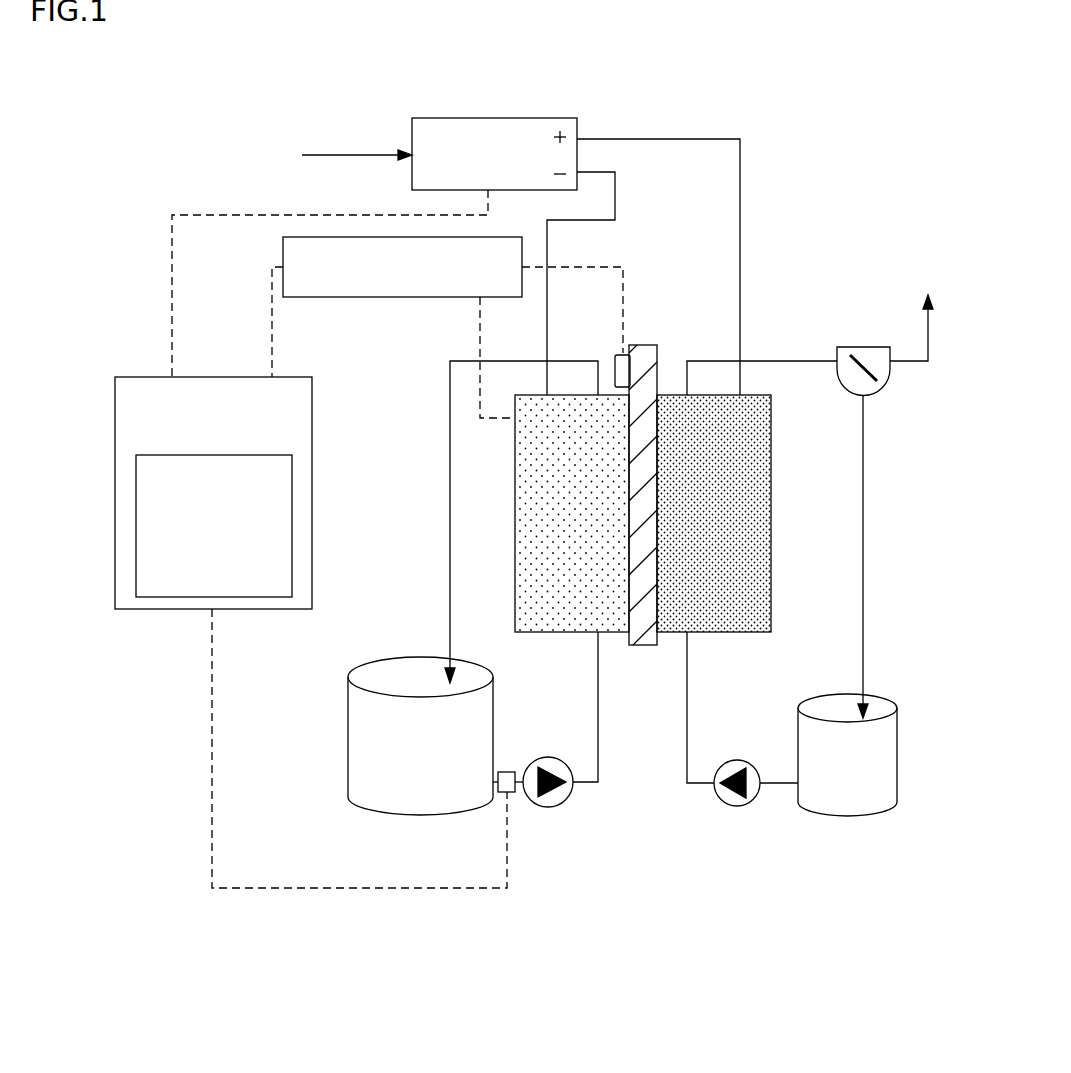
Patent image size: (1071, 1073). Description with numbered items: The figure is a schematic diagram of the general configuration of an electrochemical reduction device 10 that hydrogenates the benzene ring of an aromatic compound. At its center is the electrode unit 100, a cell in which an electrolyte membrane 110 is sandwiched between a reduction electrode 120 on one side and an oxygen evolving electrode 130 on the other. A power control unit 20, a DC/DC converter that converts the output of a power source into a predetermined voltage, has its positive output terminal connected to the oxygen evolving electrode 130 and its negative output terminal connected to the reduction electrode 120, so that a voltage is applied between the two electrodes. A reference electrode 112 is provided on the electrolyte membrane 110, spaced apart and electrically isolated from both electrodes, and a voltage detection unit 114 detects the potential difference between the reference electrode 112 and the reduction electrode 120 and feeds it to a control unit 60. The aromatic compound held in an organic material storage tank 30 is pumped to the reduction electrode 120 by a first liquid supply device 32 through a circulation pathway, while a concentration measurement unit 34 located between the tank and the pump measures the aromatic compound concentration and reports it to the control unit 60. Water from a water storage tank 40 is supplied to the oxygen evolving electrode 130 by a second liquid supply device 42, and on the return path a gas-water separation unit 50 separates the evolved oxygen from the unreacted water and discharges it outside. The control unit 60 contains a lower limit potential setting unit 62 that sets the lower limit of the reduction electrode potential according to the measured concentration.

The electrochemical reduction device 10 is at (663, 912).
The power control unit 20 is at (513, 118).
The organic material storage tank 30 is at (440, 815).
The first liquid supply device 32 is at (555, 807).
The concentration measurement unit 34 is at (507, 772).
The water storage tank 40 is at (880, 813).
The second liquid supply device 42 is at (745, 806).
The gas-water separation unit 50 is at (877, 395).
The control unit 60 is at (311, 632).
The lower limit potential setting unit 62 is at (292, 465).
The electrode unit 100 is at (665, 488).
The electrolyte membrane 110 is at (645, 645).
The reference electrode 112 is at (615, 358).
The voltage detection unit 114 is at (390, 297).
The reduction electrode 120 is at (545, 632).
The oxygen evolving electrode 130 is at (745, 632).